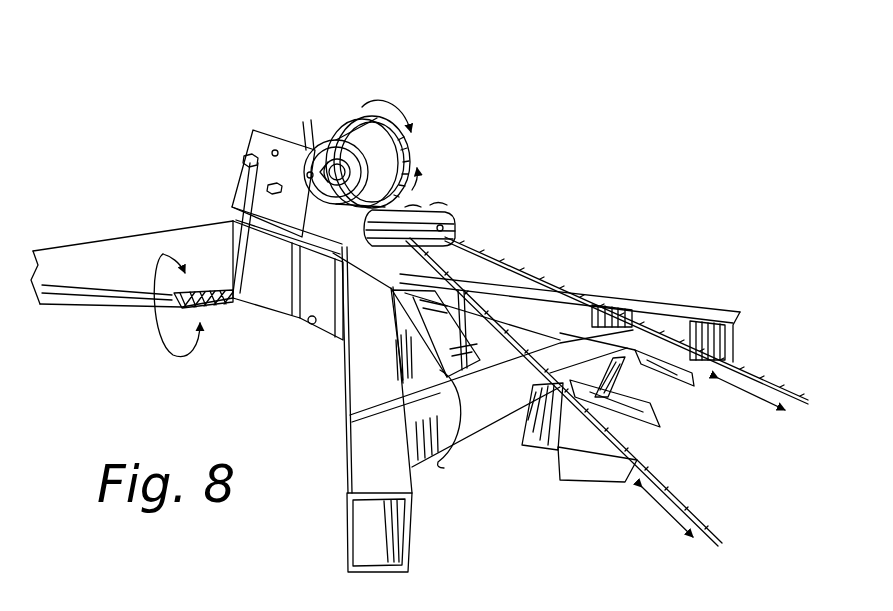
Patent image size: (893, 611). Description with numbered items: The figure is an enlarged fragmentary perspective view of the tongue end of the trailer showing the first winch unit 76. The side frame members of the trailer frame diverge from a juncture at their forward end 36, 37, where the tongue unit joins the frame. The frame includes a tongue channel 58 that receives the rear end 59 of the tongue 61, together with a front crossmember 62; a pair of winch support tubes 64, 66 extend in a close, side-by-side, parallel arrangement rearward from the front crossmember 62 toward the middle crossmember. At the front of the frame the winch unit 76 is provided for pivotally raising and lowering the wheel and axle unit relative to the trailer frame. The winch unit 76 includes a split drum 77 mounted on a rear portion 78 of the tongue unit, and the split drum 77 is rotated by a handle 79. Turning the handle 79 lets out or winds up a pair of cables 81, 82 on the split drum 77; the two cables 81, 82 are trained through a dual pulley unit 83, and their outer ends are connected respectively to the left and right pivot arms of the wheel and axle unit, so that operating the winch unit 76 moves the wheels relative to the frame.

The forward end juncture 36 is at (357, 377).
The forward end juncture 37 is at (520, 305).
The tongue channel 58 is at (440, 452).
The rear end of the tongue 59 is at (263, 283).
The tongue 61 is at (133, 248).
The front crossmember 62 is at (500, 428).
The winch support tube 64 is at (600, 457).
The winch support tube 66 is at (665, 393).
The winch unit 76 is at (320, 97).
The split drum 77 is at (404, 113).
The rear portion of the tongue unit 78 is at (318, 283).
The handle 79 is at (173, 337).
The cable 81 is at (680, 498).
The cable 82 is at (770, 380).
The dual pulley unit 83 is at (450, 214).